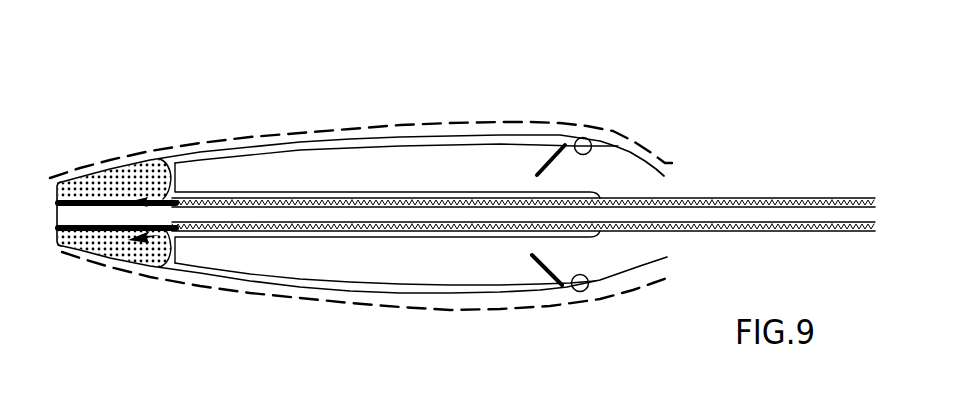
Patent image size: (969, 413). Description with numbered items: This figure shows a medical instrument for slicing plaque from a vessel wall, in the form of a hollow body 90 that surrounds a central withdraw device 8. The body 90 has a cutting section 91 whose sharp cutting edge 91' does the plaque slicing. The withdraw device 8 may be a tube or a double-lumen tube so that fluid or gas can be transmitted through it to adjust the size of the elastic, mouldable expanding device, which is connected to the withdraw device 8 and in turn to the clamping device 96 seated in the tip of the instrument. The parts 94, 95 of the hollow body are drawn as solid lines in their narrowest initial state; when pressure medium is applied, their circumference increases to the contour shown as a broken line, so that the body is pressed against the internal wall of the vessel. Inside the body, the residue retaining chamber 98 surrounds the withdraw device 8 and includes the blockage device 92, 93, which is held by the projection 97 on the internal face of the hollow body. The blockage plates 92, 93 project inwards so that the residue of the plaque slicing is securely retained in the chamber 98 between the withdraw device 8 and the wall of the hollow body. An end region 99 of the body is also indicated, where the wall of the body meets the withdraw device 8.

The withdraw device 8 is at (849, 232).
The body 90 is at (244, 307).
The cutting section 91 is at (717, 131).
The sharp cutting edge 91' is at (716, 166).
The blockage device 92 is at (552, 160).
The blockage device 93 is at (533, 265).
The part of hollow body 94 is at (362, 172).
The part of hollow body 95 is at (387, 269).
The clamping device 96 is at (130, 163).
The projection 97 is at (584, 150).
The residue retaining chamber 98 is at (297, 163).
The end wall 99 is at (598, 192).